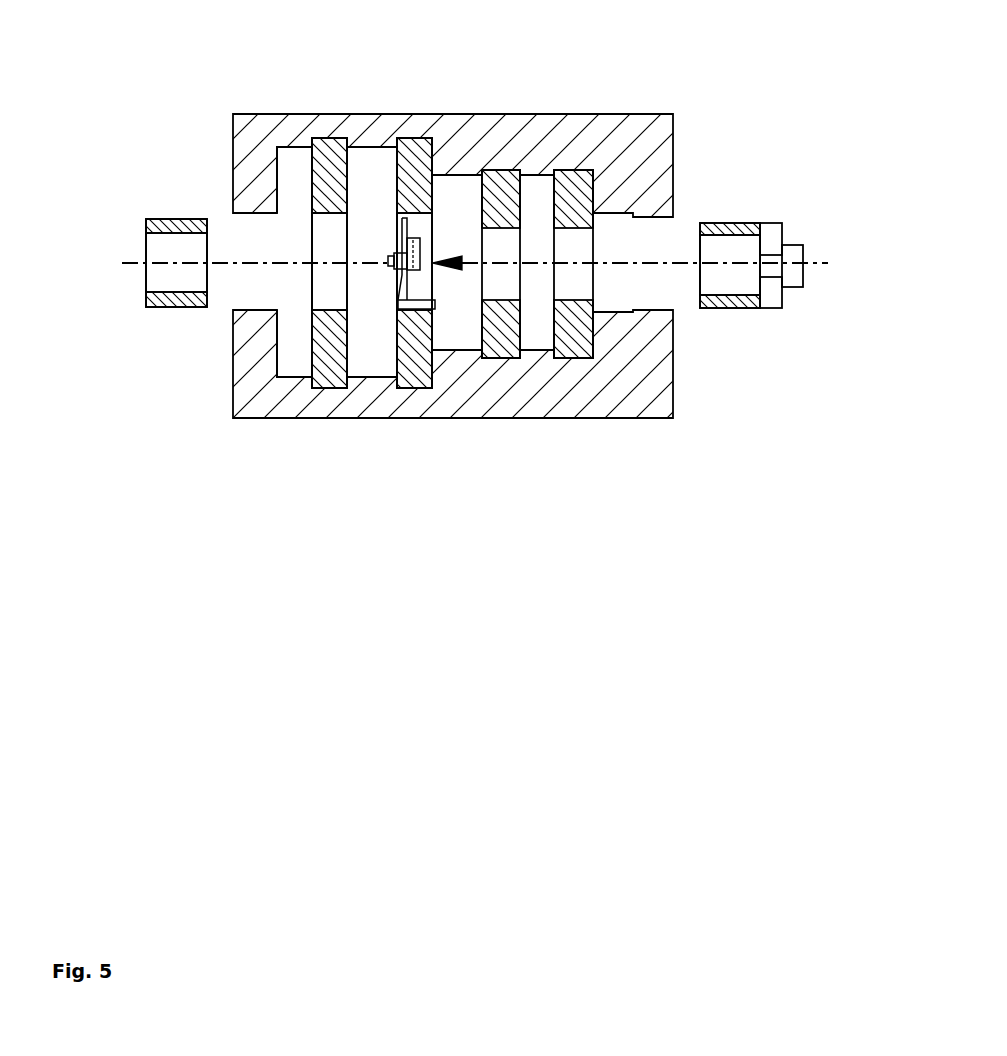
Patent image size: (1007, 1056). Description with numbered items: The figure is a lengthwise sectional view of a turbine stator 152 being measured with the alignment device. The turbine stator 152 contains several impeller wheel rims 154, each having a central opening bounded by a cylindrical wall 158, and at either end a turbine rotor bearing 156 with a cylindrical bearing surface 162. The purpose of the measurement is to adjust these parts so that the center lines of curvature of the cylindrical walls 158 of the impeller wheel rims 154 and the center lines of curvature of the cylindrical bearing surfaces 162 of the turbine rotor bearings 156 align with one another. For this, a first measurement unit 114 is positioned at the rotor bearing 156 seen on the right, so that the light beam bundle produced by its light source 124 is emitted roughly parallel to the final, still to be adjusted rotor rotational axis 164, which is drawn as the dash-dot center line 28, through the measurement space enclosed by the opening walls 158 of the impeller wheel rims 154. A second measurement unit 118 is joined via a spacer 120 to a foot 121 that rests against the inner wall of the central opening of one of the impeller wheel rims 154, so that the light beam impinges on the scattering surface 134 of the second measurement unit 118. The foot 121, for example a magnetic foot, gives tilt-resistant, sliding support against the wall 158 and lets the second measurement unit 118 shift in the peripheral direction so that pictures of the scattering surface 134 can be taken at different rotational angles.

The turbine stator 152 is at (663, 157).
The shaft axis 28 is at (727, 263).
The rotor rotational axis 164 is at (300, 263).
The impeller wheel rims 154 is at (410, 163).
The cylindrical walls 158 is at (323, 237).
The second measurement unit 118 is at (402, 220).
The spacer 120 is at (401, 282).
The foot 121 is at (430, 310).
The scattering surface 134 is at (413, 242).
The turbine rotor bearings 156 is at (177, 297).
The cylindrical bearing surfaces 162 is at (160, 273).
The light source 124 is at (770, 255).
The first measurement unit 114 is at (796, 302).